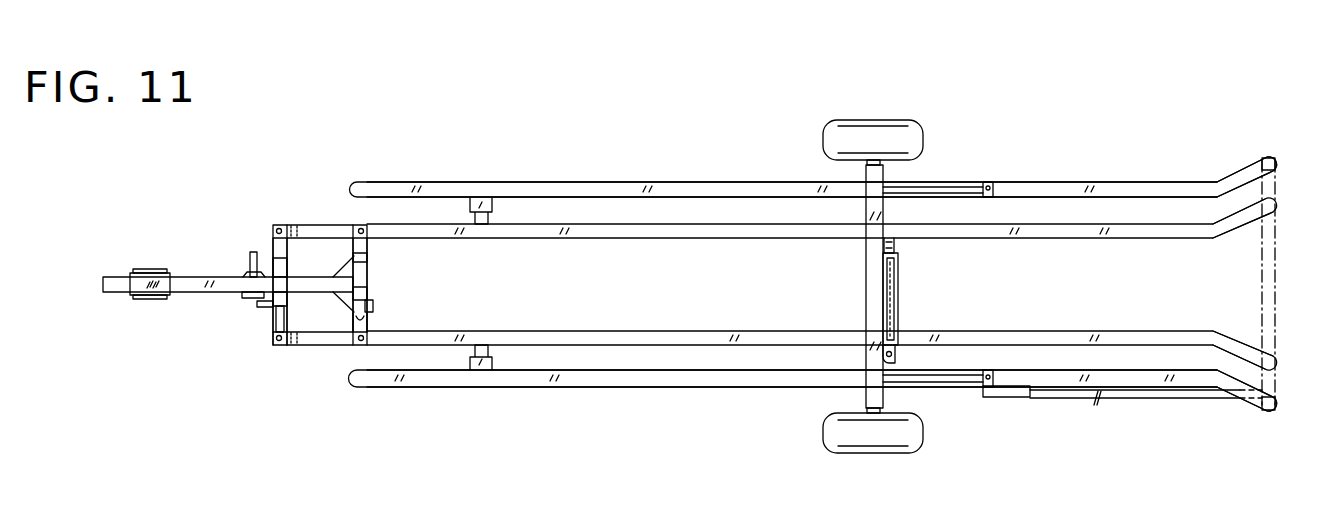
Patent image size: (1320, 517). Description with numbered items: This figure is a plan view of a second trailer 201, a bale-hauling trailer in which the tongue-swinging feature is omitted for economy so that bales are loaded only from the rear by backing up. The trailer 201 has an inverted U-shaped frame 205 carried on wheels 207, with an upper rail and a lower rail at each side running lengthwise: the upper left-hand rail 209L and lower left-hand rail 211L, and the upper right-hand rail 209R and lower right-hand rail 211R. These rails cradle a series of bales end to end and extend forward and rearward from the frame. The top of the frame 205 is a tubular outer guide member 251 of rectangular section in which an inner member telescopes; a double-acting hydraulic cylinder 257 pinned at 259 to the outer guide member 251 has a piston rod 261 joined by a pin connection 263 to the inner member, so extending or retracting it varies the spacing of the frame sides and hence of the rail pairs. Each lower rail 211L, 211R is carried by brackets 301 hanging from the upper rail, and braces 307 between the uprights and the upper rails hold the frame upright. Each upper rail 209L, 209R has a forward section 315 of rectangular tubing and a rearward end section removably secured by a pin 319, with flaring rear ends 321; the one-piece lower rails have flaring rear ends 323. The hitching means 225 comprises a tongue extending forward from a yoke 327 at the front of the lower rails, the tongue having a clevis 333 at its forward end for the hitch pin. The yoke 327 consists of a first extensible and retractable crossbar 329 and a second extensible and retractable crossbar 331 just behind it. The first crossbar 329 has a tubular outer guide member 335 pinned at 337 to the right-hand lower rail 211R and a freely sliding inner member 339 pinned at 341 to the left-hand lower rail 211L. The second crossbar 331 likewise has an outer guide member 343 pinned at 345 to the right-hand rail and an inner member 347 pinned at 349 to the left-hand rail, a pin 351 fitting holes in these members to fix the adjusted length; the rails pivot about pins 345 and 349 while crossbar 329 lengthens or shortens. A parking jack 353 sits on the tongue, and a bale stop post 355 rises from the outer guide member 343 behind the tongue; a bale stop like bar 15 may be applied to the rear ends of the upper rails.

The bale stop bar 15 is at (1099, 400).
The trailer 201 is at (250, 384).
The frame 205 is at (860, 282).
The wheels 207 is at (922, 122).
The upper right-hand rail 209R is at (689, 179).
The upper left-hand rail 209L is at (700, 387).
The lower right-hand rail 211R is at (706, 243).
The lower left-hand rail 211L is at (730, 323).
The hitching means 225 is at (198, 210).
The tubular outer guide member 251 is at (872, 344).
The double-acting hydraulic cylinder 257 is at (900, 300).
The pin connection 259 is at (896, 356).
The piston rod 261 is at (898, 262).
The pin connection 263 is at (895, 245).
The brackets 301 is at (468, 208).
The braces 307 is at (933, 190).
The forward section 315 is at (530, 190).
The pin 319 is at (990, 186).
The flaring rear ends 321 is at (1242, 180).
The flaring rear ends 323 is at (1236, 342).
The yoke 327 is at (380, 268).
The first extensible and retractable crossbar 329 is at (262, 303).
The second extensible and retractable crossbar 331 is at (350, 251).
The clevis 333 is at (117, 297).
The tubular outer guide member 335 is at (273, 228).
The pin 337 is at (282, 228).
The inner member 339 is at (273, 316).
The pin 341 is at (276, 347).
The tubular outer guide member 343 is at (366, 250).
The pin 345 is at (360, 228).
The inner member 347 is at (367, 321).
The pin 349 is at (352, 346).
The pin 351 is at (373, 304).
The parking jack 353 is at (248, 264).
The post 355 is at (362, 286).